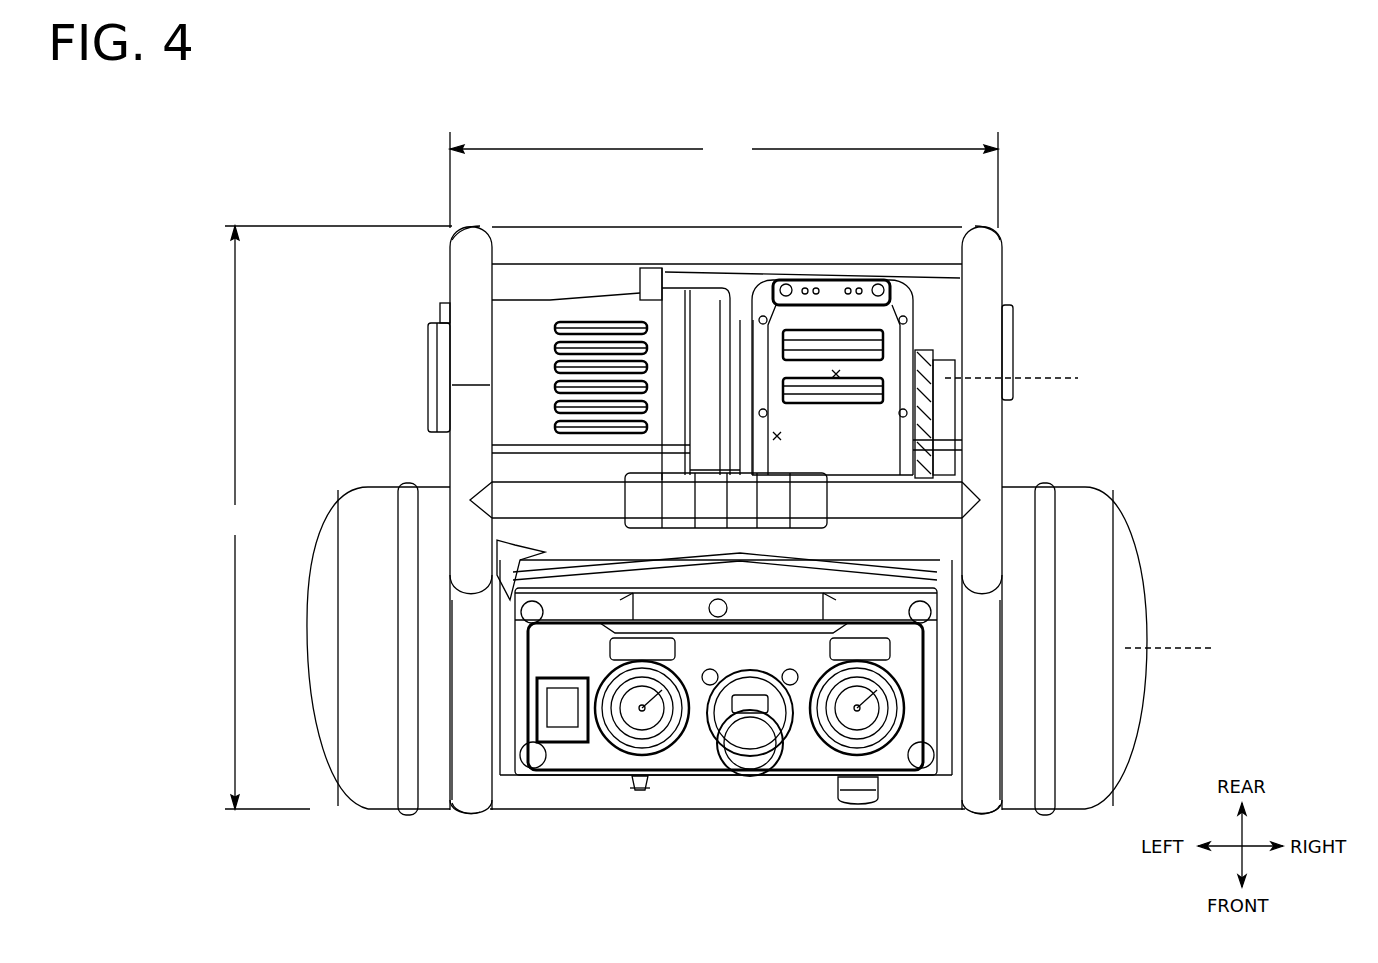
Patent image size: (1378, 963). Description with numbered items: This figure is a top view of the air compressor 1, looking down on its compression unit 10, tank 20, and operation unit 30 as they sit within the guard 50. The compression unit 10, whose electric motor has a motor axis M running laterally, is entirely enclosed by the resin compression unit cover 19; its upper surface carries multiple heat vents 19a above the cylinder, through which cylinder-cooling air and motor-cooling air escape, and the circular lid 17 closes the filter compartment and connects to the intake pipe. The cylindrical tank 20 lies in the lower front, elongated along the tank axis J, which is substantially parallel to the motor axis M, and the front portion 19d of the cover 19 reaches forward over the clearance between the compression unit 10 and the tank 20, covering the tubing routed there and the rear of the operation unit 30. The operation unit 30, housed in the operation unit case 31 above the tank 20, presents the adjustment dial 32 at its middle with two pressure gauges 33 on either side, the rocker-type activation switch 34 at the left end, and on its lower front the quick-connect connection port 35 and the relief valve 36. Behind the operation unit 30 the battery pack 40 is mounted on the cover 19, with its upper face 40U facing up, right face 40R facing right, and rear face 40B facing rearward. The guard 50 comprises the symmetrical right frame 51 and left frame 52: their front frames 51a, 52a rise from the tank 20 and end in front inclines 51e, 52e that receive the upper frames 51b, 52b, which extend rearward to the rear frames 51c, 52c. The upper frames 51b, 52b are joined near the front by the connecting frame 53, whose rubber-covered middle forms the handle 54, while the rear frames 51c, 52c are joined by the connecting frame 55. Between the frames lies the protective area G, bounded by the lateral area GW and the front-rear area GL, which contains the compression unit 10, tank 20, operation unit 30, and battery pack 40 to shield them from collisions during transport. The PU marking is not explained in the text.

The air compressor 1 is at (1178, 280).
The compression unit 10 is at (700, 290).
The lid 17 is at (430, 357).
The compression unit cover 19 is at (600, 388).
The heat vents 19a is at (580, 322).
The front portion 19d is at (547, 552).
The tank 20 is at (1130, 608).
The operation unit 30 is at (803, 755).
The operation unit case 31 is at (580, 775).
The adjustment dial 32 is at (750, 755).
The pressure gauges 33 is at (645, 722).
The activation switch 34 is at (563, 713).
The connection port 35 is at (857, 806).
The relief valve 36 is at (638, 790).
The battery pack 40 is at (938, 324).
The rear face 40B is at (862, 310).
The right face 40R is at (920, 332).
The upper face 40U is at (873, 428).
The guard 50 is at (728, 530).
The right frame 51 is at (1075, 545).
The front frame 51a is at (985, 812).
The upper frame 51b is at (980, 437).
The rear frame 51c is at (1003, 228).
The front incline 51e is at (985, 718).
The left frame 52 is at (374, 543).
The front frame 52a is at (470, 815).
The upper frame 52b is at (470, 393).
The rear frame 52c is at (452, 228).
The front incline 52e is at (410, 812).
The connecting frame 53 is at (530, 497).
The handle 54 is at (805, 492).
The connecting frame 55 is at (790, 246).
The protective area G is at (777, 436).
The pump unit PU is at (836, 372).
The motor axis M is at (1024, 378).
The tank axis J is at (1178, 648).
The lateral area GW is at (724, 180).
The front-rear area GL is at (337, 517).